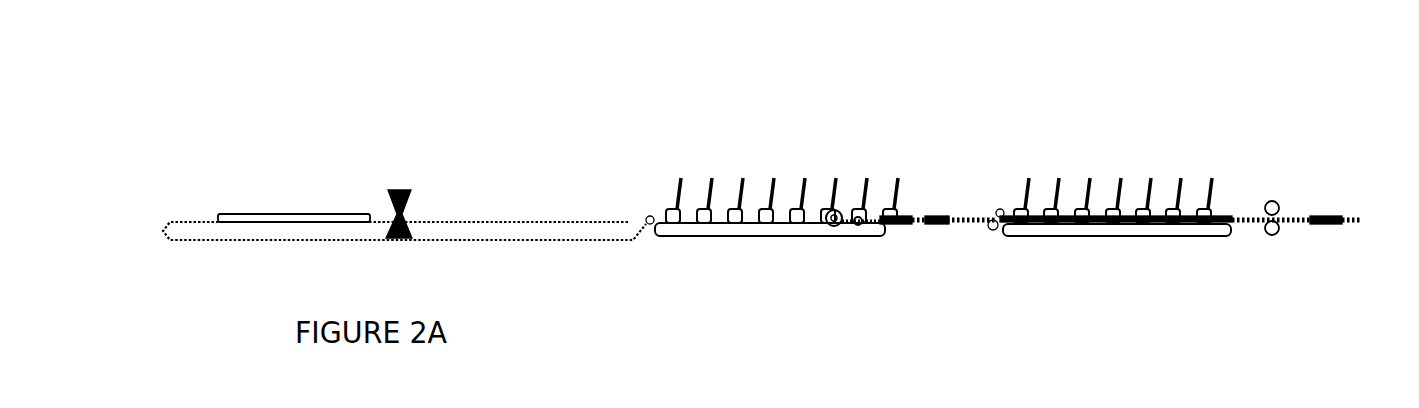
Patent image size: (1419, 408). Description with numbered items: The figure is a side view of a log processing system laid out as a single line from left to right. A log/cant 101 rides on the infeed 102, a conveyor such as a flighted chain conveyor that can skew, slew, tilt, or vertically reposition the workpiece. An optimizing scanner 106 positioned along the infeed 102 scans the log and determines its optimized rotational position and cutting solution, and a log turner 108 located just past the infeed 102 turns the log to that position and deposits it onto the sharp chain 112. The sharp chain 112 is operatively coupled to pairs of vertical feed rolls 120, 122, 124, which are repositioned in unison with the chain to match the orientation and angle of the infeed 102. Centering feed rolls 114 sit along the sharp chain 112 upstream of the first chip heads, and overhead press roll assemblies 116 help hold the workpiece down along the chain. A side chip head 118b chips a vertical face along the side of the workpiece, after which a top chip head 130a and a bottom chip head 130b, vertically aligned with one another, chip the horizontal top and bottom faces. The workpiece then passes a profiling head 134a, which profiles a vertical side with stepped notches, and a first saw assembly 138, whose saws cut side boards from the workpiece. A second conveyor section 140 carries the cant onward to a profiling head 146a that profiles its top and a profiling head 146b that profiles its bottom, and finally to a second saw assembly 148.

The log/cant 101 is at (282, 161).
The infeed 102 is at (404, 169).
The optimizing scanner 106 is at (362, 185).
The log turner 108 is at (597, 166).
The sharp chain 112 is at (770, 268).
The centering feed rolls 114 is at (622, 123).
The overhead press roll assemblies 116 is at (621, 149).
The chip head 118b is at (766, 137).
The vertical feed rolls 120 is at (884, 293).
The vertical feed rolls 122 is at (901, 284).
The vertical feed rolls 124 is at (896, 273).
The top chip head 130a is at (818, 119).
The bottom chip head 130b is at (925, 257).
The profiling head 134a is at (891, 112).
The first saw assembly 138 is at (1053, 204).
The second conveyor section 140 is at (1116, 262).
The profiling head 146a is at (1202, 143).
The profiling head 146b is at (1237, 267).
The second saw assembly 148 is at (1268, 128).